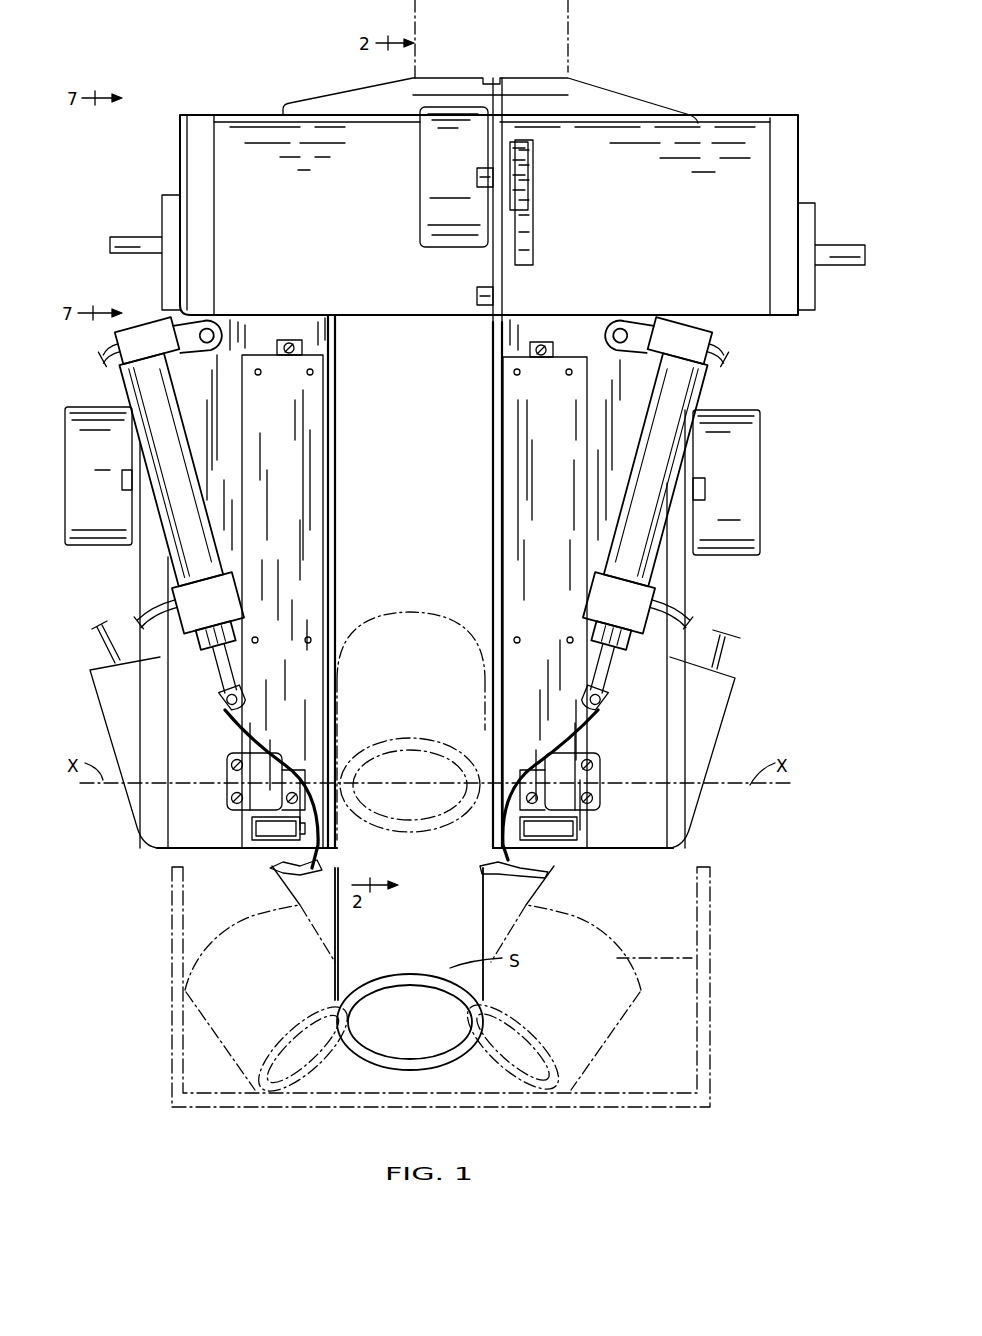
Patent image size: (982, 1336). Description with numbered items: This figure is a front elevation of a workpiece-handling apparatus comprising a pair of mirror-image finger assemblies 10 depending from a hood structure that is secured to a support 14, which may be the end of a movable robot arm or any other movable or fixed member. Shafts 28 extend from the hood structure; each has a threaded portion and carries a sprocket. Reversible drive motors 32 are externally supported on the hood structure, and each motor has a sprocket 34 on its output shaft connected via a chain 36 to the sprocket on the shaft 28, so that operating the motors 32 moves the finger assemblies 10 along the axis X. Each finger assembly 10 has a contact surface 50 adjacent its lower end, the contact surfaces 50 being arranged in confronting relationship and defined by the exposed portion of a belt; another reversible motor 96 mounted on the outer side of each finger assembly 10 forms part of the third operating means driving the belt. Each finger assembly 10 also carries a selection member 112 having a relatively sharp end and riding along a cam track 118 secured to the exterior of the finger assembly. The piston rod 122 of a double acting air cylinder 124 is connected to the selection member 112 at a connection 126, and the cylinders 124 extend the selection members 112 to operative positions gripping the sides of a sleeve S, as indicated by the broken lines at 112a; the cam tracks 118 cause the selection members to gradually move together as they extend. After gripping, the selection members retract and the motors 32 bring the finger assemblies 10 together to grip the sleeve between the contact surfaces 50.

The finger assembly 10 is at (97, 604).
The support 14 is at (550, 36).
The shaft 28 is at (123, 242).
The reversible drive motor 32 is at (424, 163).
The sprocket 34 is at (530, 145).
The chain 36 is at (523, 217).
The contact surface 50 is at (322, 867).
The reversible motor 96 is at (70, 512).
The selection member 112 is at (308, 522).
The selection member in operative position 112a is at (273, 872).
The cam track 118 is at (317, 343).
The piston rod 122 is at (230, 673).
The double acting air cylinder 124 is at (167, 452).
The connection 126 is at (238, 700).